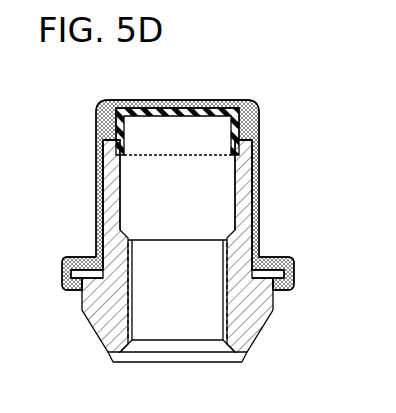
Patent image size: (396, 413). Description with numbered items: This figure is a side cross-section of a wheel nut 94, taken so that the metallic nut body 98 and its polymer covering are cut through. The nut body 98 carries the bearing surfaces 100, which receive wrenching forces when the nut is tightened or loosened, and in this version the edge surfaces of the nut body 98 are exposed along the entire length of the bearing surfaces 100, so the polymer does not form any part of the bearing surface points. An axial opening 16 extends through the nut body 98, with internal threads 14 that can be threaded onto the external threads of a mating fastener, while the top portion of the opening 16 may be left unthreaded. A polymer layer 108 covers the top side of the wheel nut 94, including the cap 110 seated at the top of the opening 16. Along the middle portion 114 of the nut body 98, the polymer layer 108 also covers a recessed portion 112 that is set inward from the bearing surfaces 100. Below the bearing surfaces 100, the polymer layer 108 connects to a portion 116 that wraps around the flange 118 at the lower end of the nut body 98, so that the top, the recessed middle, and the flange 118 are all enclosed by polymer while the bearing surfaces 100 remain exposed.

The wheel nut 94 is at (226, 84).
The nut body 98 is at (257, 338).
The bearing surfaces 100 is at (96, 166).
The polymer layer 108 is at (116, 107).
The cap 110 is at (149, 117).
The recessed portion 112 is at (120, 194).
The middle portion 114 is at (96, 205).
The portion 116 is at (62, 278).
The flange 118 is at (76, 274).
The internal threads 14 is at (133, 316).
The axial opening 16 is at (185, 176).